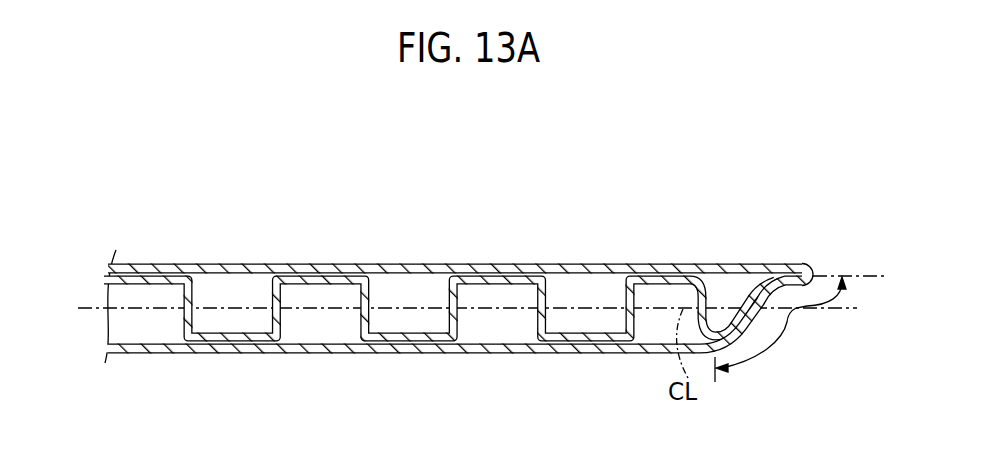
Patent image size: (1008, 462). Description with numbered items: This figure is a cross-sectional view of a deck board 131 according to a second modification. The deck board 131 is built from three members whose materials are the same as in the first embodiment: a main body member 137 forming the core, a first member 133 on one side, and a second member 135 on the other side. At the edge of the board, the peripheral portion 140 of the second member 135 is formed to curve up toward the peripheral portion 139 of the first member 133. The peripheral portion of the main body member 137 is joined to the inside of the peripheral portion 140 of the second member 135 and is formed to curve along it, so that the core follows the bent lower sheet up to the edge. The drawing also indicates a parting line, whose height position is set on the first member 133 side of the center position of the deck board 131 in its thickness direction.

The deck board 131 is at (443, 284).
The first member 133 is at (173, 263).
The second member 135 is at (177, 355).
The main body member 137 is at (186, 327).
The peripheral portion of the first member 139 is at (808, 266).
The peripheral portion of the second member 140 is at (772, 351).